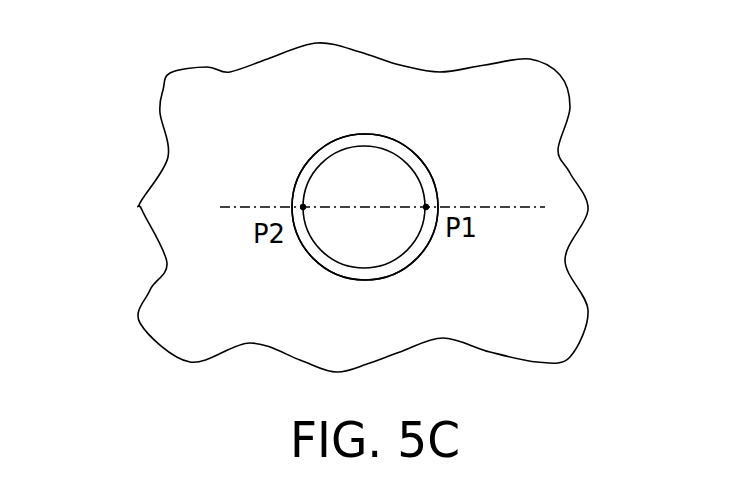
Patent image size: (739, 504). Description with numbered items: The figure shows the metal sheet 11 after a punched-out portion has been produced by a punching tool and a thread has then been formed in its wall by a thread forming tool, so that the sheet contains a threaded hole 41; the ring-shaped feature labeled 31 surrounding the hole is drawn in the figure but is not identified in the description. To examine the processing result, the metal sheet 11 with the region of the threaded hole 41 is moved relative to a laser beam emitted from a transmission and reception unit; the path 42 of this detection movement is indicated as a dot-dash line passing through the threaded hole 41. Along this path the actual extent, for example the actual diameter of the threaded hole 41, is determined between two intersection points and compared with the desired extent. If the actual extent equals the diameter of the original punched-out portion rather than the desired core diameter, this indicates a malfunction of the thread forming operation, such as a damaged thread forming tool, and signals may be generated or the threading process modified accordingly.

The metal sheet 11 is at (529, 319).
The through hole 31 is at (312, 177).
The threaded hole 41 is at (327, 263).
The path of the detection movement 42 is at (383, 205).